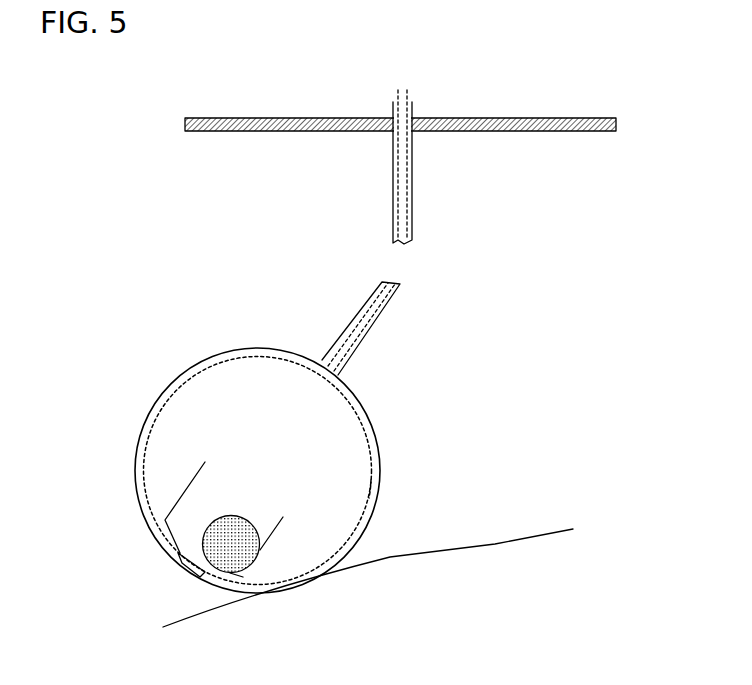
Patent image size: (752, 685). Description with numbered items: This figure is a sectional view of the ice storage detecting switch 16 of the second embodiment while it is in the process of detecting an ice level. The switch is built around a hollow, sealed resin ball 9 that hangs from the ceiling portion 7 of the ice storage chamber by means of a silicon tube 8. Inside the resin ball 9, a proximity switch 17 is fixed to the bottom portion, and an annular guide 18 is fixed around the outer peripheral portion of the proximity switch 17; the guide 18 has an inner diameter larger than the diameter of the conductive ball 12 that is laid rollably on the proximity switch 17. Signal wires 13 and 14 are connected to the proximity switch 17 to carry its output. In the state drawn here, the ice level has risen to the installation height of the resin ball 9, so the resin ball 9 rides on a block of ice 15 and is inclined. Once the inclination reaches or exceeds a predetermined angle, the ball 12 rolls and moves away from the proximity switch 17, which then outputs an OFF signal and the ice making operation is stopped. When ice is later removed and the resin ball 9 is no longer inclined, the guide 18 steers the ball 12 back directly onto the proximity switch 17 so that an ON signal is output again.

The ceiling portion 7 is at (560, 131).
The silicon tube 8 is at (360, 341).
The resin ball 9 is at (380, 477).
The ball 12 is at (237, 515).
The signal wire 13 is at (203, 370).
The signal wire 14 is at (372, 488).
The ice 15 is at (495, 544).
The ice storage detecting switch 16 is at (318, 280).
The proximity switch 17 is at (180, 565).
The guide 18 is at (268, 540).